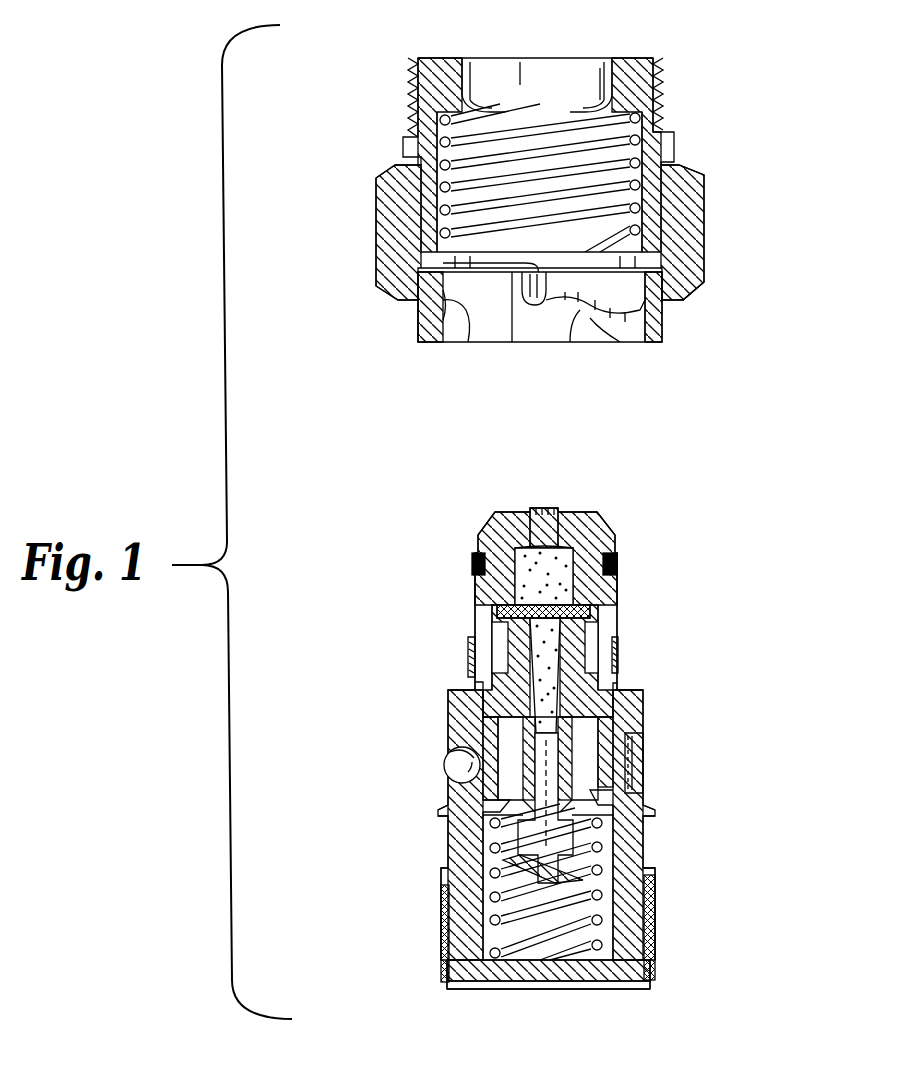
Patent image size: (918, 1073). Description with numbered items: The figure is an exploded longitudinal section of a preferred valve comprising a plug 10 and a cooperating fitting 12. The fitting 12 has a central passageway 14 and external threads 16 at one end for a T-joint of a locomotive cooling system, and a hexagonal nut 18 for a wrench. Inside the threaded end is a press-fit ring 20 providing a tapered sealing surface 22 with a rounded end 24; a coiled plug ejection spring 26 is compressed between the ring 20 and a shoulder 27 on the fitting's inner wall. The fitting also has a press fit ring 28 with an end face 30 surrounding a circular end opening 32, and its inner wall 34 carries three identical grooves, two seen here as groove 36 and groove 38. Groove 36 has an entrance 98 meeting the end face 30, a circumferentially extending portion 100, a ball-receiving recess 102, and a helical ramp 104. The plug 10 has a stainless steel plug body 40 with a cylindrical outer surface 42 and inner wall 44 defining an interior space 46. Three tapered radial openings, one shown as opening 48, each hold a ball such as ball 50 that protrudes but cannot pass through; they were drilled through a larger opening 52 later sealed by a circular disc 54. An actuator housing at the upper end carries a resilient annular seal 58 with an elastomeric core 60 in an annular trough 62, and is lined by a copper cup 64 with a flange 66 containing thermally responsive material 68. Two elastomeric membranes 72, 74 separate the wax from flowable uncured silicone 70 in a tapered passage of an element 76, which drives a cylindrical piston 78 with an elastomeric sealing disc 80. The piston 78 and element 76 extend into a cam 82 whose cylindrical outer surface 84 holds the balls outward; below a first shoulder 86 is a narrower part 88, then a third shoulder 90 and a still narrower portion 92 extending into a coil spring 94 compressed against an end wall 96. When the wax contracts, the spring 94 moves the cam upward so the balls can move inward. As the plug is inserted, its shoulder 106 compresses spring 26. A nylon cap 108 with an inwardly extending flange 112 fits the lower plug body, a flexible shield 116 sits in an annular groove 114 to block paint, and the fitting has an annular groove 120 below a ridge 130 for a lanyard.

The plug 10 is at (722, 690).
The fitting 12 is at (730, 180).
The central passageway 14 is at (640, 270).
The external threads 16 is at (660, 96).
The hexagonal nut 18 is at (704, 282).
The press-fit ring 20 is at (628, 58).
The tapered sealing surface 22 is at (477, 60).
The rounded end 24 is at (520, 62).
The plug ejection spring 26 is at (395, 190).
The shoulder 27 is at (440, 245).
The press fit ring 28 is at (420, 325).
The end face 30 is at (650, 342).
The circular end opening 32 is at (667, 452).
The inner wall 34 is at (528, 330).
The groove 36 is at (640, 300).
The groove 38 is at (470, 322).
The plug body 40 is at (655, 893).
The outer surface 42 is at (450, 866).
The inner wall 44 is at (447, 960).
The interior space 46 is at (540, 985).
The radial opening 48 is at (440, 735).
The ball 50 is at (460, 763).
The larger opening 52 is at (640, 740).
The circular disc 54 is at (645, 765).
The resilient annular seal 58 is at (622, 556).
The elastomeric core 60 is at (478, 552).
The annular trough 62 is at (472, 566).
The copper cup 64 is at (600, 600).
The flange 66 is at (562, 582).
The thermally responsive material 68 is at (518, 570).
The flowable uncured silicone 70 is at (620, 633).
The elastomeric membrane 72 is at (510, 612).
The elastomeric membrane 74 is at (500, 632).
The element 76 is at (617, 680).
The cylindrical piston 78 is at (485, 685).
The elastomeric sealing disc 80 is at (480, 662).
The cam 82 is at (580, 830).
The cylindrical outer surface 84 is at (483, 708).
The first shoulder 86 is at (483, 790).
The narrower part 88 is at (448, 820).
The third shoulder 90 is at (450, 858).
The narrower portion 92 is at (450, 912).
The coil spring 94 is at (605, 922).
The end wall 96 is at (655, 988).
The entrance 98 is at (648, 345).
The circumferentially extending portion 100 is at (560, 277).
The ball-receiving recess 102 is at (443, 263).
The helical ramp 104 is at (590, 362).
The shoulder 106 is at (635, 690).
The cap 108 is at (650, 950).
The inwardly extending flange 112 is at (452, 992).
The annular groove 114 is at (620, 857).
The shield 116 is at (655, 812).
The annular groove 120 is at (674, 160).
The ridge 130 is at (403, 145).